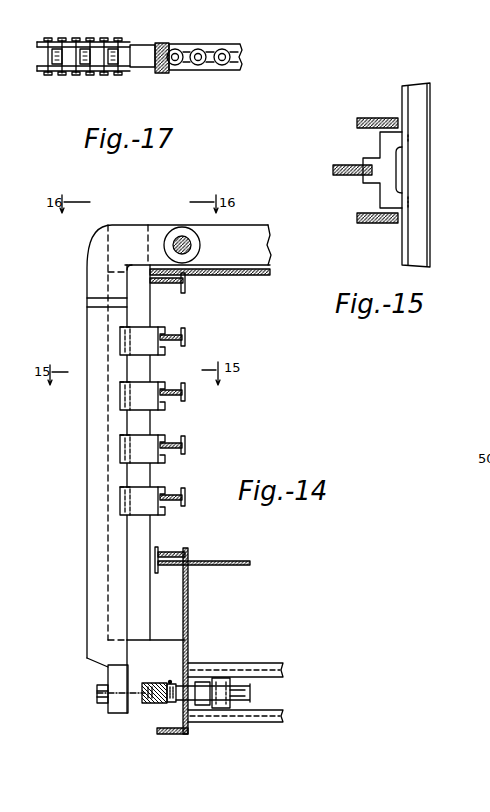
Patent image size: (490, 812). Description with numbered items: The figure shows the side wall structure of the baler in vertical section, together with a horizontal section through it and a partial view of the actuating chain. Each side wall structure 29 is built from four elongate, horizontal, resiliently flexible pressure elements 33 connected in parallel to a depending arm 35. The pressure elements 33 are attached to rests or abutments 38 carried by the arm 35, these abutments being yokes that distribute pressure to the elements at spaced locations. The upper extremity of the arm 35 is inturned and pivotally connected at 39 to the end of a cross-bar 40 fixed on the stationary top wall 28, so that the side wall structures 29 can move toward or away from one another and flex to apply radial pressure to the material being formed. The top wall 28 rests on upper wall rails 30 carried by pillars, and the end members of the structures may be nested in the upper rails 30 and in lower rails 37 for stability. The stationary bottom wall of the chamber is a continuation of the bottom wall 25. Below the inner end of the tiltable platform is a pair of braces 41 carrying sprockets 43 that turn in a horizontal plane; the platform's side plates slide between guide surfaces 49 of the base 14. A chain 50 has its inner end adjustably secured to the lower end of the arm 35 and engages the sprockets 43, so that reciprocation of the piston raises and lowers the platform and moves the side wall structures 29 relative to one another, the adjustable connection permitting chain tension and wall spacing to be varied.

In FIG. 14, the base 14 is at (177, 737).
In FIG. 14, the bottom wall 25 is at (227, 562).
In FIG. 14, the stationary top wall 28 is at (270, 271).
In FIG. 15, the side wall structure 29 is at (398, 93).
In FIG. 14, the side wall structure 29 is at (80, 440).
In FIG. 14, the upper wall rail 30 is at (186, 287).
In FIG. 15, the pressure element 33 is at (420, 178).
In FIG. 14, the pressure element 33 is at (183, 340).
In FIG. 15, the depending arm 35 is at (346, 165).
In FIG. 14, the depending arm 35 is at (92, 470).
In FIG. 14, the lower rail 37 is at (186, 552).
In FIG. 15, the abutment 38 is at (385, 187).
In FIG. 14, the abutment 38 is at (150, 401).
In FIG. 14, the pivotal connection 39 is at (191, 247).
In FIG. 14, the cross-bar 40 is at (268, 243).
In FIG. 14, the brace 41 is at (284, 668).
In FIG. 14, the sprocket 43 is at (222, 705).
In FIG. 14, the guide surface 49 is at (189, 615).
In FIG. 17, the chain 50 is at (207, 71).
In FIG. 14, the chain 50 is at (252, 693).